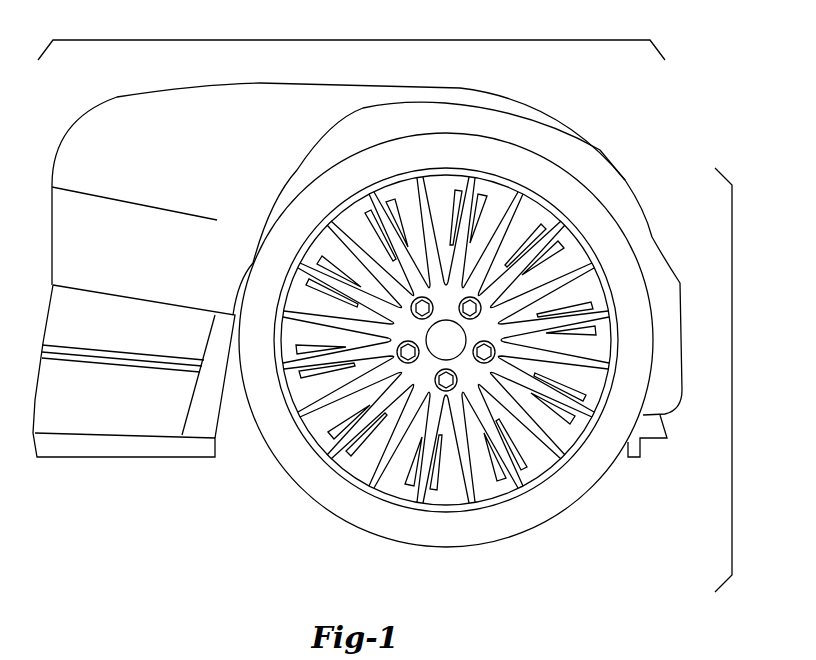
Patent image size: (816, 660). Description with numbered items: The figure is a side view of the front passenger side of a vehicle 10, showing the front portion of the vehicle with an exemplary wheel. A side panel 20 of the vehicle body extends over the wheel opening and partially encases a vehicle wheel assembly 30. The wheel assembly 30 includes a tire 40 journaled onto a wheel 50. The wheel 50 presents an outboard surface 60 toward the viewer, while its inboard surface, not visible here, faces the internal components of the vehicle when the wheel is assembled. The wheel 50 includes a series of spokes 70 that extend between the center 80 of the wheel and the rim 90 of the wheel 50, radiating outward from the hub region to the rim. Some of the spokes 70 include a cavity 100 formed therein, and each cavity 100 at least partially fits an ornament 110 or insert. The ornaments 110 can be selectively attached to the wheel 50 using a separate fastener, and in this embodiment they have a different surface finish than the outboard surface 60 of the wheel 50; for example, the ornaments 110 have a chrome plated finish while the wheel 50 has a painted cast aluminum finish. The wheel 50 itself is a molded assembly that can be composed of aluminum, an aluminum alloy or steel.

The vehicle 10 is at (352, 40).
The side panel 20 is at (172, 154).
The wheel assembly 30 is at (732, 380).
The tire 40 is at (297, 478).
The wheel 50 is at (452, 150).
The outboard surface 60 is at (580, 473).
The spokes 70 is at (420, 197).
The center 80 is at (548, 218).
The rim 90 is at (444, 508).
The cavity 100 is at (562, 252).
The ornament 110 is at (490, 210).